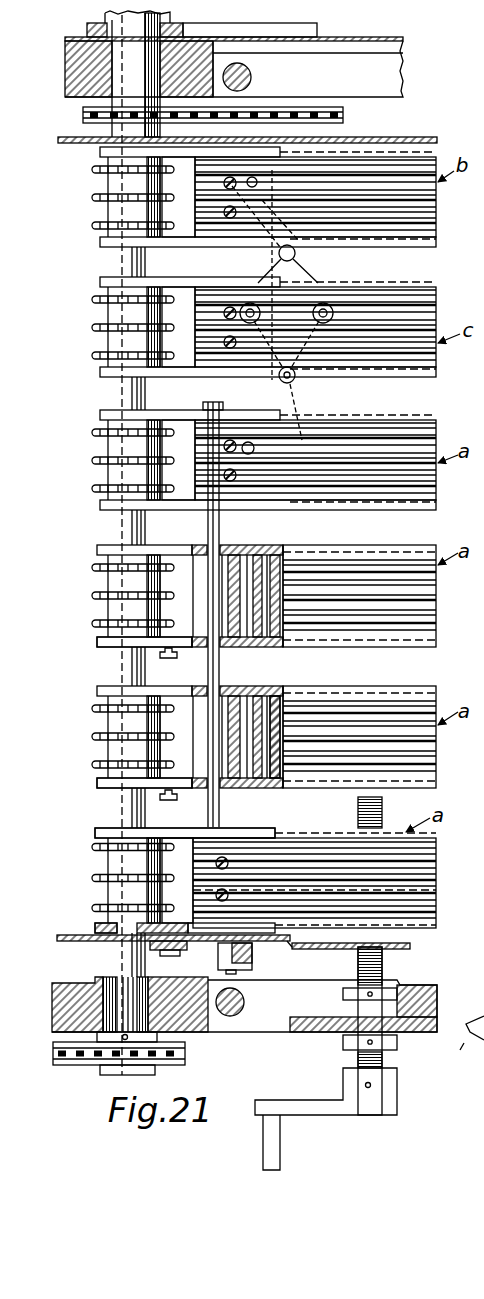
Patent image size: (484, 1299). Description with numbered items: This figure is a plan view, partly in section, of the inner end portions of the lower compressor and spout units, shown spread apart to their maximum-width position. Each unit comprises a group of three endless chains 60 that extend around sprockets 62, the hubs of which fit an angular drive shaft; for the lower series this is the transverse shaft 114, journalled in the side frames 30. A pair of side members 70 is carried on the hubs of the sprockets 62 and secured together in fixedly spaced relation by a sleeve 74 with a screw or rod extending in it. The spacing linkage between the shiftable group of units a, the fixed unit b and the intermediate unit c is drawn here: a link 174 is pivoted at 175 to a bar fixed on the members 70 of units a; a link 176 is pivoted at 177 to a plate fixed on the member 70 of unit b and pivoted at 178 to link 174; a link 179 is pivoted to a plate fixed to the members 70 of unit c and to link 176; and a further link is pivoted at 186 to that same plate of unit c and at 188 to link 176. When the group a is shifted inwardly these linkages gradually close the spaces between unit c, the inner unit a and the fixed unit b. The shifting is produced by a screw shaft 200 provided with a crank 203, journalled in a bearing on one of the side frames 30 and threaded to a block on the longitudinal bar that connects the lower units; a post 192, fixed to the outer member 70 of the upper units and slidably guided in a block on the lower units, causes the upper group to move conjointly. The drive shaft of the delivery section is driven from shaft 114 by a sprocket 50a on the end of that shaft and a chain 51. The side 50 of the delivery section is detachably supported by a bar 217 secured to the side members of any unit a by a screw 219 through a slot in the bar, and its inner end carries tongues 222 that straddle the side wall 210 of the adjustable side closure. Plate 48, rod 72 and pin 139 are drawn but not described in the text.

The side frames 30 is at (298, 1030).
The plate 48 is at (382, 136).
The side of the delivery section 50 is at (72, 936).
The sprocket 50a is at (124, 1056).
The chain 51 is at (88, 1062).
The endless chains 60 is at (315, 832).
The sprockets 62 is at (98, 623).
The side members 70 is at (100, 646).
The rod 72 is at (223, 667).
The sleeve 74 is at (280, 705).
The transverse shaft 114 is at (118, 814).
The pin 139 is at (252, 78).
The link 174 is at (300, 390).
The pivot 175 is at (262, 450).
The link 176 is at (300, 258).
The pivot 177 is at (258, 182).
The pivot 178 is at (333, 318).
The link 179 is at (266, 366).
The pivot 186 is at (257, 256).
The pivot 188 is at (300, 243).
The post 192 is at (252, 957).
The screw shaft 200 is at (381, 820).
The crank 203 is at (300, 1116).
The side wall 210 is at (396, 948).
The bar 217 is at (178, 950).
The screw 219 is at (168, 659).
The tongues 222 is at (312, 949).